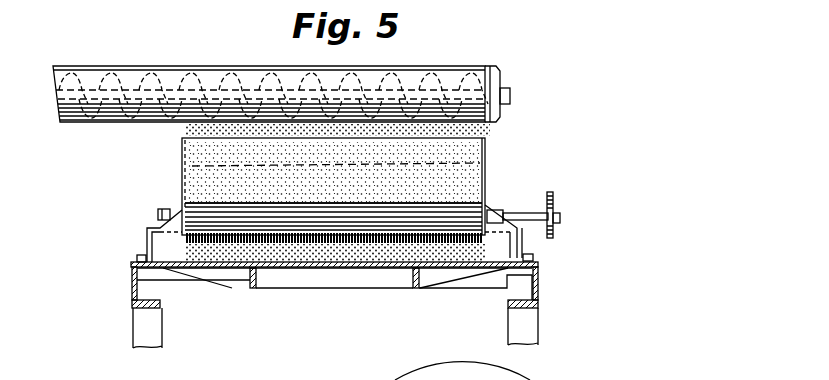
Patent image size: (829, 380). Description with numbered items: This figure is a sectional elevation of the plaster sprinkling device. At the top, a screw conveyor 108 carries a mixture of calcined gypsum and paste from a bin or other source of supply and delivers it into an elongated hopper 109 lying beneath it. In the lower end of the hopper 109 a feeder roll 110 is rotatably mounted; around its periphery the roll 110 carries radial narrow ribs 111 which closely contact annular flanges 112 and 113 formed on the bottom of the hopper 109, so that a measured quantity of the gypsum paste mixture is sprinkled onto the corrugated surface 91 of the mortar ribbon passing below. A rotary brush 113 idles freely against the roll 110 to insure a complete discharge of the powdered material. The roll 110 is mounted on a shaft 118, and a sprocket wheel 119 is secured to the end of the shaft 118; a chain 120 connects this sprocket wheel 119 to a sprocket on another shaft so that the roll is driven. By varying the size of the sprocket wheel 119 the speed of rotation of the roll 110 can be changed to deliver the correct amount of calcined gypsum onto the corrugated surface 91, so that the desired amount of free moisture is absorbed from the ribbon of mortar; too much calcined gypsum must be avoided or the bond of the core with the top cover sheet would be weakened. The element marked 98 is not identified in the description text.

The screw conveyor 108 is at (455, 66).
The elongated hopper 109 is at (486, 166).
The feeder roll 110 is at (478, 221).
The radial narrow ribs 111 is at (178, 240).
The annular flange 112 is at (200, 212).
The annular flange / rotary brush 113 is at (483, 241).
The shaft 118 is at (531, 212).
The sprocket wheel 119 is at (554, 205).
The chain 120 is at (561, 229).
The corrugated surface 91 is at (241, 266).
The drum 98 is at (494, 262).